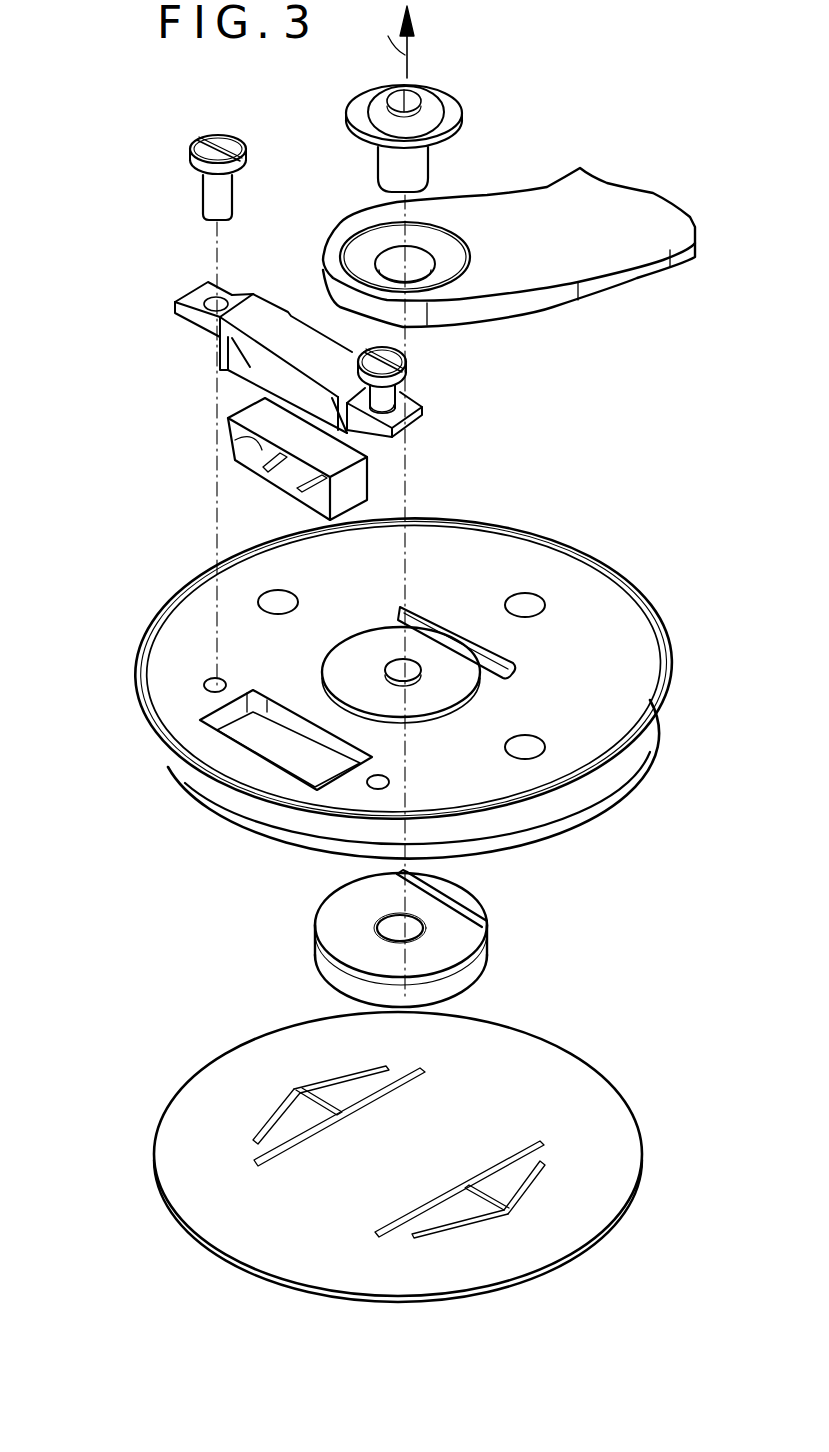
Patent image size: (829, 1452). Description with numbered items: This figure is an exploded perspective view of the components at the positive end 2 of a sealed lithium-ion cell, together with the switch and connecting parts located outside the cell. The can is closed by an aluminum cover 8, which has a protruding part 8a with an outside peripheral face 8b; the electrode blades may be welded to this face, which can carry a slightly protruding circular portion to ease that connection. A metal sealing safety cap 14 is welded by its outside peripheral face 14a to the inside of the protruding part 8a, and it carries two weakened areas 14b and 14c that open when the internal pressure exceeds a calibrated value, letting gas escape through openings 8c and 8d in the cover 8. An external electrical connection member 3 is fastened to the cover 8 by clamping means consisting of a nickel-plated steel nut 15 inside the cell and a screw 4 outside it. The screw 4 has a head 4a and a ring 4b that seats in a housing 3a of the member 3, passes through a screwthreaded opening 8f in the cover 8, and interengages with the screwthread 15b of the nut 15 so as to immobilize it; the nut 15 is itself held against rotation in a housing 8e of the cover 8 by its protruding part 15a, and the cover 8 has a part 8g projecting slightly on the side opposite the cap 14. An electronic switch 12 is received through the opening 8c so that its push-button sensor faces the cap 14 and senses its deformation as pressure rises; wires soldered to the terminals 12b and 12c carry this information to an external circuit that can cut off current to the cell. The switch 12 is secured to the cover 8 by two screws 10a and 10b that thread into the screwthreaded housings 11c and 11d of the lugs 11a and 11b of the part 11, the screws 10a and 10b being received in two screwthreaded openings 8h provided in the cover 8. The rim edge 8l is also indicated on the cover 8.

The positive end 2 is at (132, 448).
The electrical connection member 3 is at (606, 286).
The housing 3a is at (433, 240).
The screw 4 is at (350, 98).
The head 4a is at (430, 108).
The ring 4b is at (453, 120).
The cover 8 is at (478, 588).
The protruding part 8a is at (613, 798).
The outside peripheral face 8b is at (573, 822).
The opening 8c is at (283, 713).
The openings 8d is at (274, 600).
The housing 8e is at (500, 665).
The screwthreaded opening 8f is at (386, 665).
The projecting part 8g is at (433, 720).
The screwthreaded openings 8h is at (205, 683).
The top rim edge 8l is at (640, 754).
The screw 10a is at (228, 138).
The screw 10b is at (404, 348).
The part 11 is at (261, 330).
The lug 11a is at (197, 295).
The lug 11b is at (420, 421).
The screwthreaded housing 11c is at (226, 300).
The screwthreaded housing 11d is at (408, 390).
The electronic switch 12 is at (357, 488).
The terminal 12b is at (245, 458).
The terminal 12c is at (288, 492).
The sealing safety cap 14 is at (613, 1084).
The outside peripheral face 14a is at (263, 1276).
The weakened area 14b is at (323, 1100).
The weakened area 14c is at (478, 1200).
The nut 15 is at (489, 953).
The protruding part 15a is at (463, 895).
The screwthread 15b is at (378, 923).